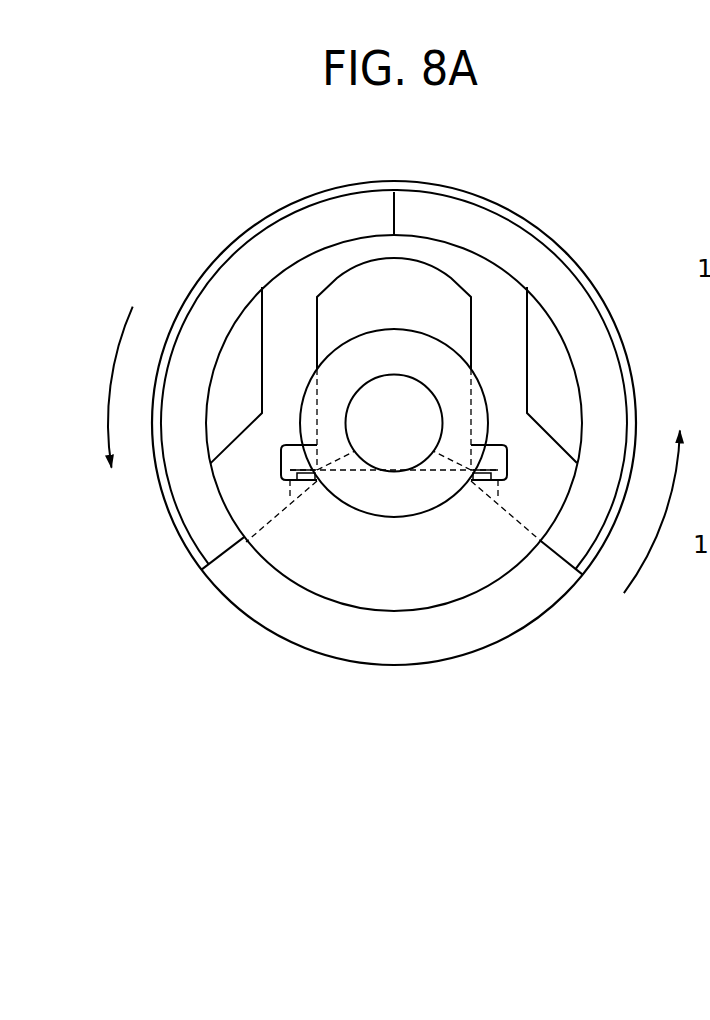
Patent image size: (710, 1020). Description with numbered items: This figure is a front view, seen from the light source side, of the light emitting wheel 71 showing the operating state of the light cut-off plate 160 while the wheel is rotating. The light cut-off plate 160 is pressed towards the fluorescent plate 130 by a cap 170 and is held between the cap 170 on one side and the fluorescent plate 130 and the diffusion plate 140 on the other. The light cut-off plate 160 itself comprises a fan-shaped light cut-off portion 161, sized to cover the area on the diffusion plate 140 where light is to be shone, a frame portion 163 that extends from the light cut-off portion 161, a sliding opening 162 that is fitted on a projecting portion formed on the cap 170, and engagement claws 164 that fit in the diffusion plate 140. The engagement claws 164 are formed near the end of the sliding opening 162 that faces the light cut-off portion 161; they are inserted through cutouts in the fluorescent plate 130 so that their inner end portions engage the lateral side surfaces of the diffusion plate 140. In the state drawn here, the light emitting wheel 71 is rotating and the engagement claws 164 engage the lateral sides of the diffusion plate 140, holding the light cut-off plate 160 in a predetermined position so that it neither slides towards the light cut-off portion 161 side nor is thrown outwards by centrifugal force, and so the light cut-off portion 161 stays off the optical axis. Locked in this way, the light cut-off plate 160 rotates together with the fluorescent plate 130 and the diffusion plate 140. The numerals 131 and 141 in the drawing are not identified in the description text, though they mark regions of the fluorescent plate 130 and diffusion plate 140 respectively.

The light emitting wheel 71 is at (578, 248).
The fluorescent plate 130 is at (183, 295).
The ring wall 131 is at (598, 377).
The diffusion plate 140 is at (218, 594).
The rim segment 141 is at (394, 641).
The light cut-off plate 160 is at (295, 591).
The light cut-off portion 161 is at (355, 558).
The sliding opening 162 is at (428, 307).
The frame portion 163 is at (289, 313).
The engagement claws 164 is at (477, 486).
The cap 170 is at (363, 328).